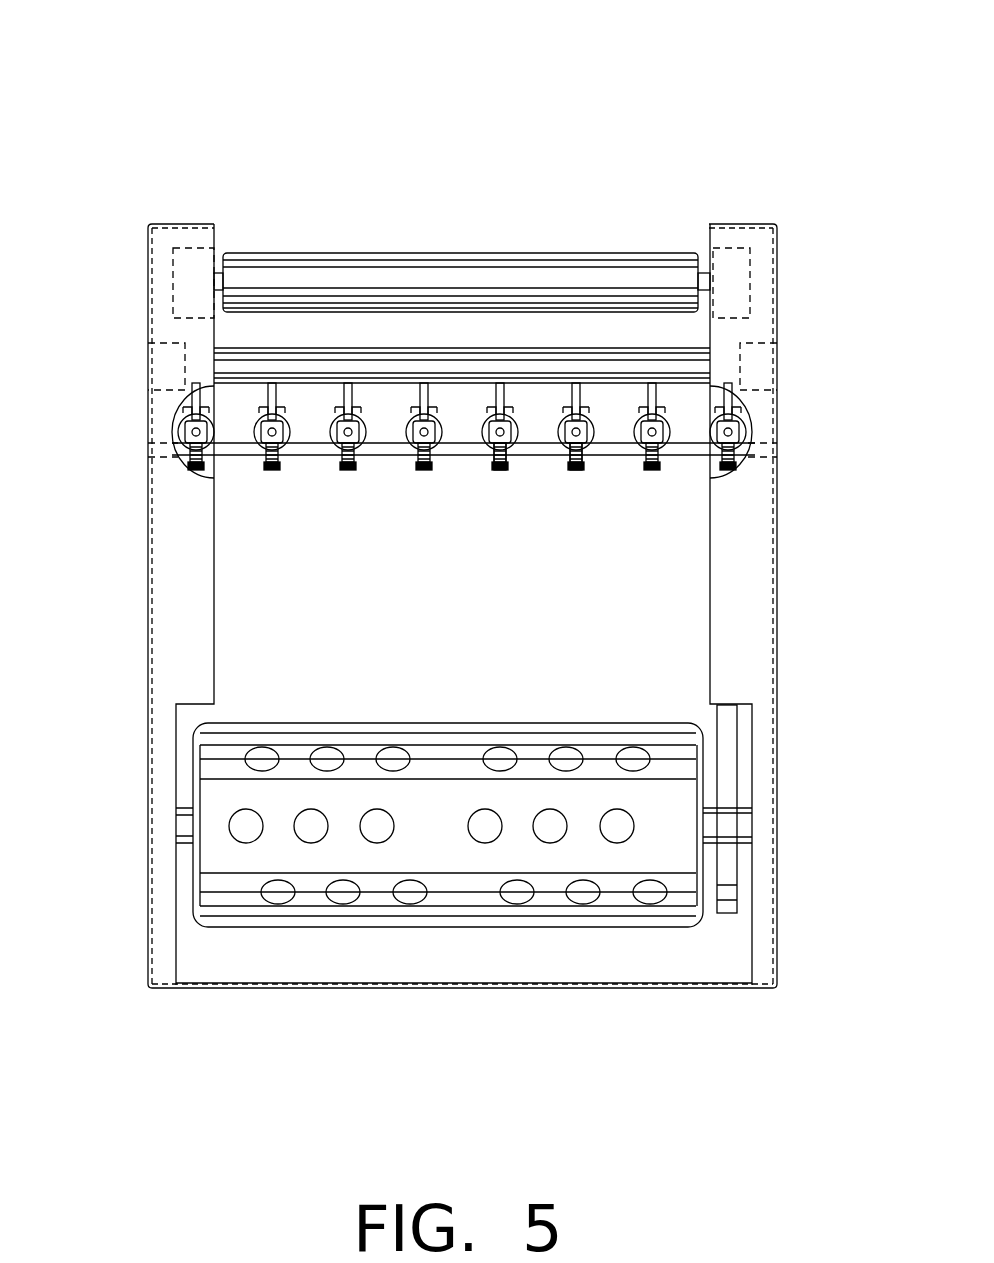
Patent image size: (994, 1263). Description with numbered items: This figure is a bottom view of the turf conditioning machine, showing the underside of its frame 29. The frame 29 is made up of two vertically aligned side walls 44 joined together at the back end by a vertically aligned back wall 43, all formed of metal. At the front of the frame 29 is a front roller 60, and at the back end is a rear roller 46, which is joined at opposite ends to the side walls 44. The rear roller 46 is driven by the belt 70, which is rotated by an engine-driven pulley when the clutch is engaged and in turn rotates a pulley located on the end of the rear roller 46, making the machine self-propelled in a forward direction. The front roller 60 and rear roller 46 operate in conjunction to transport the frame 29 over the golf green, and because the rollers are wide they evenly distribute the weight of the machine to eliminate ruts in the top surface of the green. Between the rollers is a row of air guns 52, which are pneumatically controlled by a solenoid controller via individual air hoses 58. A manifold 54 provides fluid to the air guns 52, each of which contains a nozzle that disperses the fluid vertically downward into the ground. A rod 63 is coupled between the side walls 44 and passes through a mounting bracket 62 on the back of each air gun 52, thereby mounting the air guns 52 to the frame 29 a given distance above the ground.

The frame 29 is at (712, 136).
The back wall 43 is at (273, 990).
The side walls 44 is at (148, 543).
The rear roller 46 is at (295, 735).
The air guns 52 is at (385, 545).
The manifold 54 is at (458, 362).
The air hoses 58 is at (353, 395).
The front roller 60 is at (577, 255).
The mounting bracket 62 is at (577, 470).
The rod 63 is at (468, 458).
The belt 70 is at (722, 750).